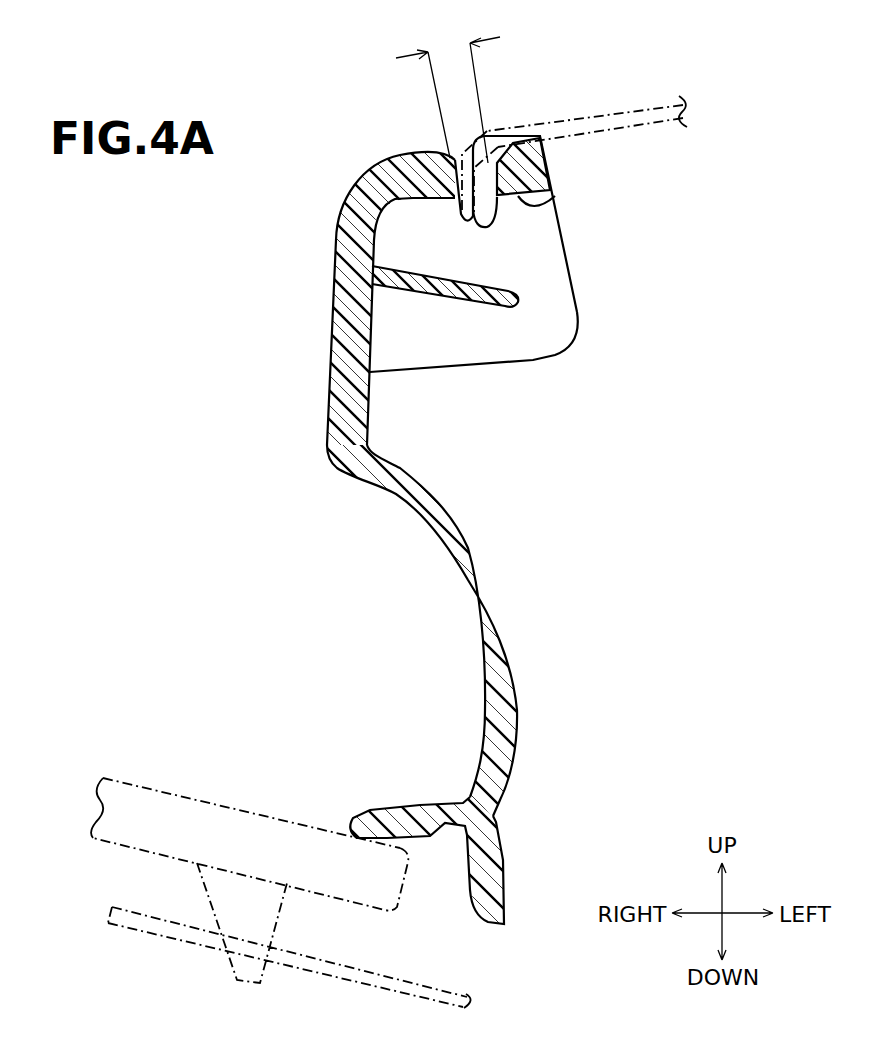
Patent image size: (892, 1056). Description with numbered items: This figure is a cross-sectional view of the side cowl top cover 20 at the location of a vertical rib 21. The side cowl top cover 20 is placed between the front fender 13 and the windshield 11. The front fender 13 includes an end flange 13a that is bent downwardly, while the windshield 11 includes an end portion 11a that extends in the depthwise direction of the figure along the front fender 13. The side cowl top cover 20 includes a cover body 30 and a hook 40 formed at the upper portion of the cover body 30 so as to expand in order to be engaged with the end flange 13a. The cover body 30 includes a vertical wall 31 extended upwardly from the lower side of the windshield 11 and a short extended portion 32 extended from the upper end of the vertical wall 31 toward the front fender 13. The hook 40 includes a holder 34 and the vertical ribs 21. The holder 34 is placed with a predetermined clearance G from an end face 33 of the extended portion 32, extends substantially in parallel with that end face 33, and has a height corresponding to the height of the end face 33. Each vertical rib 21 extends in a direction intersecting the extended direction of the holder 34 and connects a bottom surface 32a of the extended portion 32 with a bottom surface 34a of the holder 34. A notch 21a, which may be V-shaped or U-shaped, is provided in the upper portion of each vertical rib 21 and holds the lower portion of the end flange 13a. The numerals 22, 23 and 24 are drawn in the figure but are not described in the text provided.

The windshield 11 is at (117, 812).
The end portion 11a is at (320, 830).
The front fender 13 is at (617, 112).
The end flange 13a is at (486, 158).
The side cowl top cover 20 is at (171, 369).
The vertical rib 21 is at (538, 340).
The notch 21a is at (487, 217).
The holding rib 22 is at (463, 300).
The seal lip 23 is at (497, 667).
The attachment foot 24 is at (397, 808).
The cover body 30 is at (317, 467).
The vertical wall 31 is at (342, 412).
The extended portion 32 is at (411, 178).
The bottom surface 32a is at (410, 205).
The end face 33 is at (460, 152).
The holder 34 is at (542, 148).
The bottom surface 34a is at (530, 198).
The hook 40 is at (589, 250).
The clearance G is at (448, 91).